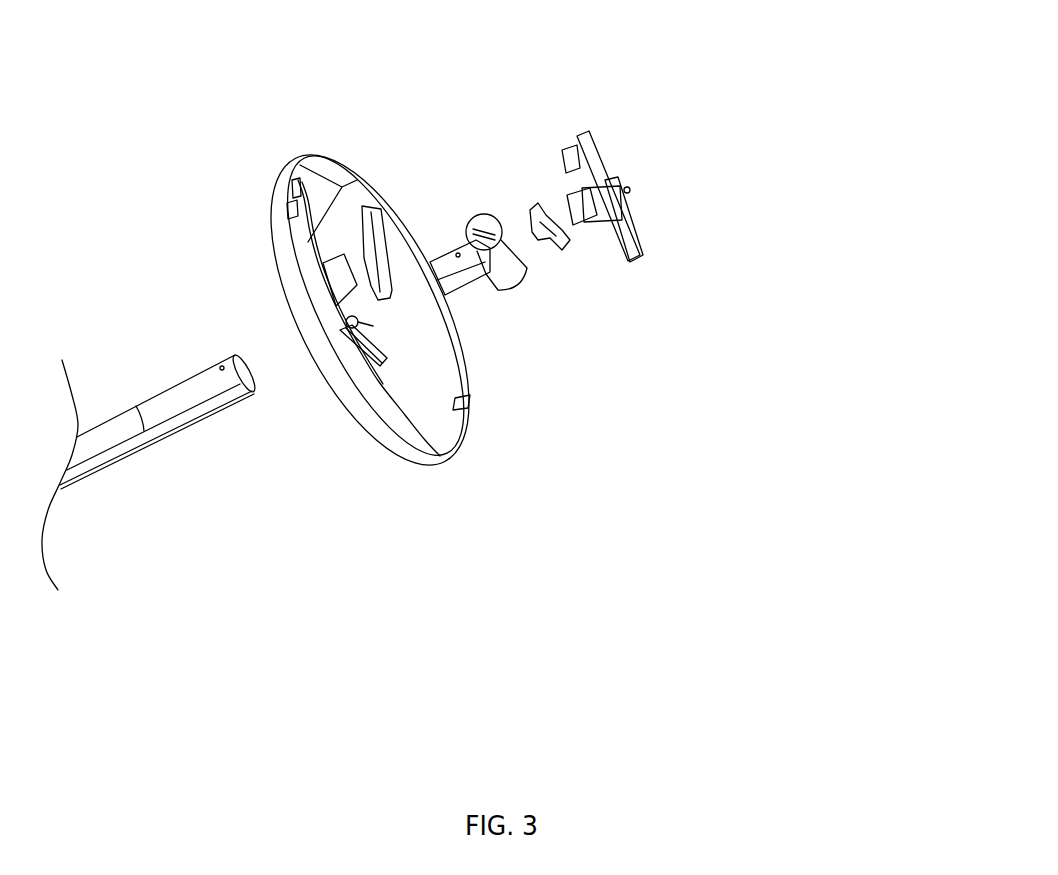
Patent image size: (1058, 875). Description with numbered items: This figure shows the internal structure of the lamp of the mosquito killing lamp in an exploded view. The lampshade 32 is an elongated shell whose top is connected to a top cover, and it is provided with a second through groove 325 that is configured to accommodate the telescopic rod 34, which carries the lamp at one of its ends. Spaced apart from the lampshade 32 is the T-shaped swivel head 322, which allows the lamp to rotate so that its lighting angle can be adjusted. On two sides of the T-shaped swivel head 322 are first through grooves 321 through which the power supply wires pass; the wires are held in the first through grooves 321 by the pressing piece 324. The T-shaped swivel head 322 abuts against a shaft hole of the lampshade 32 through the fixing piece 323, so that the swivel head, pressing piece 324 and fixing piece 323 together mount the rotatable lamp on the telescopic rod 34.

The lampshade 32 is at (430, 395).
The first through groove 321 is at (537, 275).
The T-shaped swivel head 322 is at (500, 267).
The fixing piece 323 is at (633, 263).
The pressing piece 324 is at (562, 248).
The second through groove 325 is at (367, 212).
The telescopic rod 34 is at (195, 410).